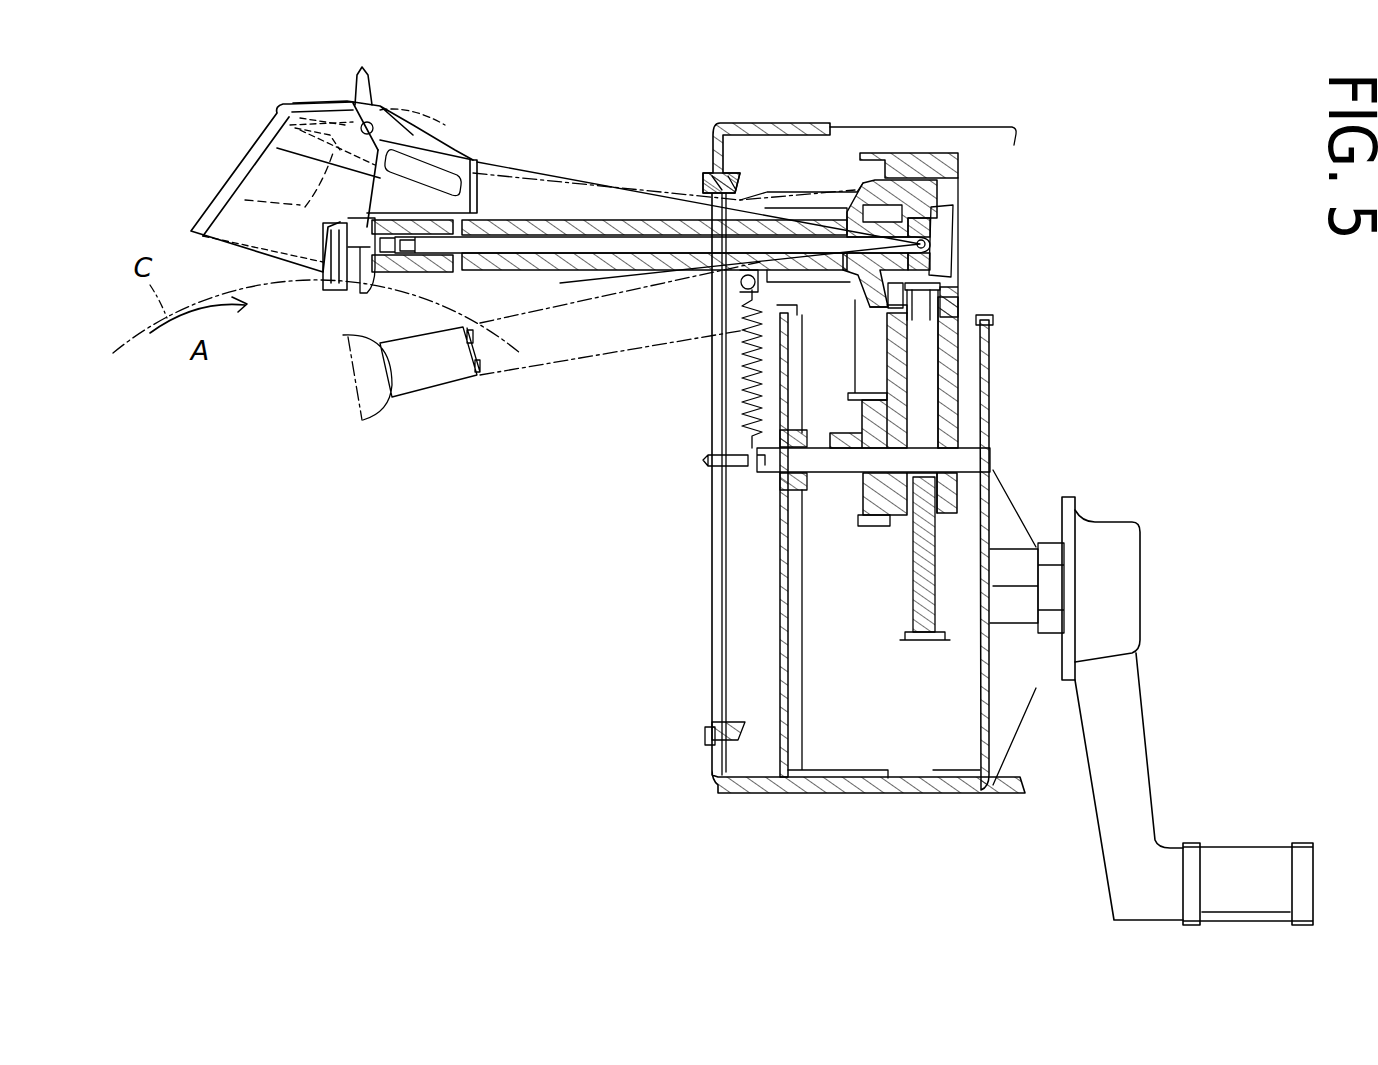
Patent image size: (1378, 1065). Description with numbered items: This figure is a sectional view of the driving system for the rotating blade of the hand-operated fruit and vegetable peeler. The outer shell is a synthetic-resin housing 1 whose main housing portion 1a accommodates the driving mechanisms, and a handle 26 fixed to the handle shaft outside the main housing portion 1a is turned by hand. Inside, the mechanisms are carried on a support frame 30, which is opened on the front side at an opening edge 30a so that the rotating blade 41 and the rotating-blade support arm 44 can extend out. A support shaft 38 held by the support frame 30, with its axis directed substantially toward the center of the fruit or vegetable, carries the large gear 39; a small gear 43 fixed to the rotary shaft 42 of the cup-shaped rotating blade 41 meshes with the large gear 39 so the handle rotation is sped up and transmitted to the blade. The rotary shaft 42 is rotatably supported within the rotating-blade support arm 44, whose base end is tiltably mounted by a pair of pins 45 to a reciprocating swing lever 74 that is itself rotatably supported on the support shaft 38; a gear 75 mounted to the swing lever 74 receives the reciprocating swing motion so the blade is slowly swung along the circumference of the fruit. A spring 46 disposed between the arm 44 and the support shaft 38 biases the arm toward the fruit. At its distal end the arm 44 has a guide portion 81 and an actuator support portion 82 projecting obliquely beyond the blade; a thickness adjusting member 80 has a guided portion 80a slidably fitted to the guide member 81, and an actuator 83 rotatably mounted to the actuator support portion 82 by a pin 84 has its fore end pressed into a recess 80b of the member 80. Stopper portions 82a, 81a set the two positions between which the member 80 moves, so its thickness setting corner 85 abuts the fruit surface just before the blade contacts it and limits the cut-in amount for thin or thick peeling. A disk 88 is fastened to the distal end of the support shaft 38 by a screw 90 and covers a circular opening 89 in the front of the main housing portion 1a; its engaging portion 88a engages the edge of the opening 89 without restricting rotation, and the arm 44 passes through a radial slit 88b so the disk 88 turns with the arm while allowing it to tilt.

The housing 1 is at (889, 100).
The main housing portion 1a is at (940, 127).
The handle 26 is at (1145, 748).
The support frame 30 is at (990, 752).
The opening edge 30a is at (790, 295).
The support shaft 38 is at (948, 450).
The large gear 39 is at (912, 607).
The rotating blade 41 is at (360, 278).
The rotary shaft 42 is at (570, 240).
The small gear 43 is at (955, 200).
The rotating-blade support arm 44 is at (624, 219).
The pins 45 is at (928, 246).
The spring 46 is at (735, 400).
The reciprocating swing lever 74 is at (910, 355).
The gear 75 is at (875, 528).
The thickness adjusting member 80 is at (224, 140).
The guided portion 80a is at (305, 207).
The recess 80b is at (430, 130).
The guide portion 81 is at (307, 150).
The stopper portion 81a is at (395, 172).
The actuator support portion 82 is at (440, 105).
The stopper portion 82a is at (300, 130).
The actuator 83 is at (356, 86).
The pin 84 is at (375, 125).
The thickness setting corner 85 is at (330, 280).
The disk 88 is at (703, 540).
The engaging portion 88a is at (737, 724).
The slit 88b is at (703, 345).
The circular opening 89 is at (708, 730).
The screw 90 is at (703, 460).